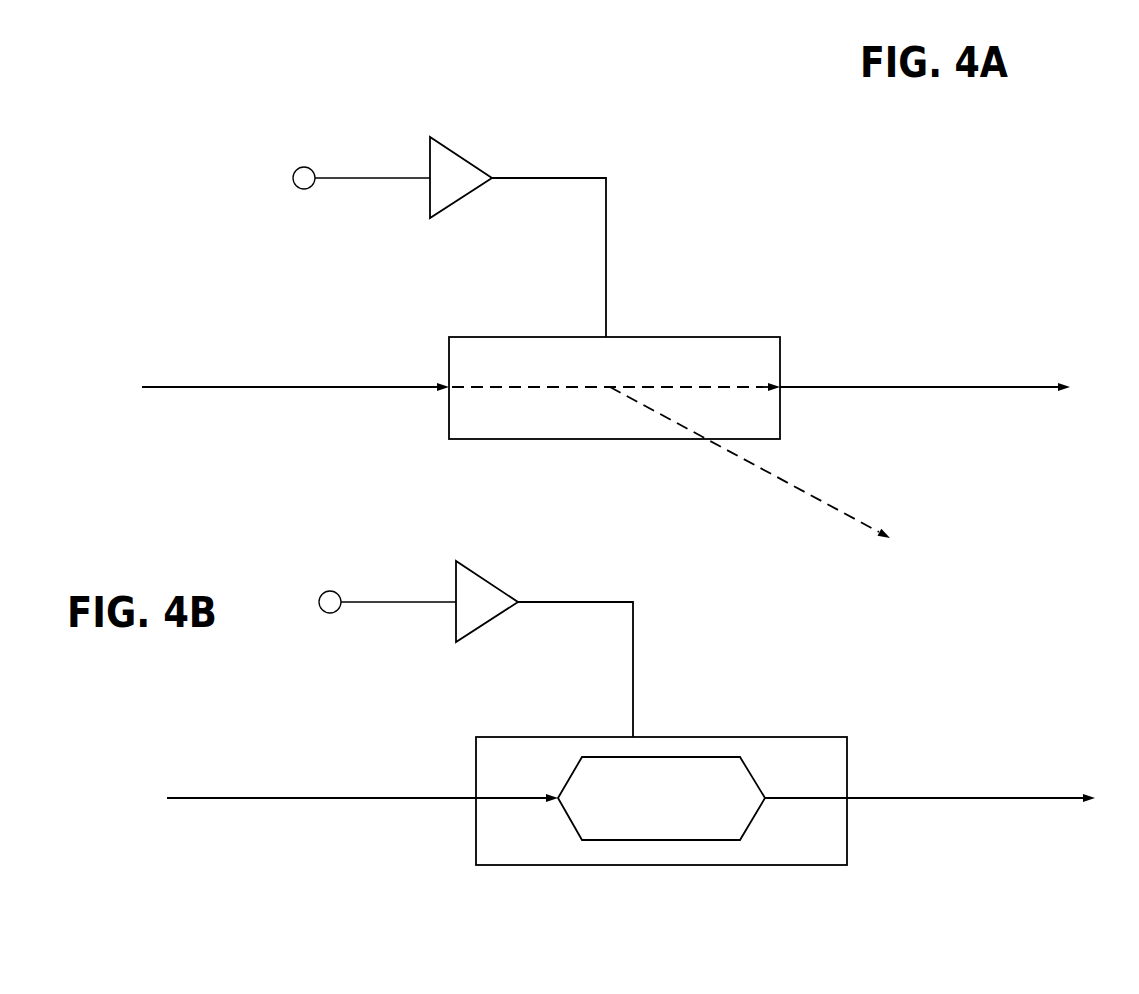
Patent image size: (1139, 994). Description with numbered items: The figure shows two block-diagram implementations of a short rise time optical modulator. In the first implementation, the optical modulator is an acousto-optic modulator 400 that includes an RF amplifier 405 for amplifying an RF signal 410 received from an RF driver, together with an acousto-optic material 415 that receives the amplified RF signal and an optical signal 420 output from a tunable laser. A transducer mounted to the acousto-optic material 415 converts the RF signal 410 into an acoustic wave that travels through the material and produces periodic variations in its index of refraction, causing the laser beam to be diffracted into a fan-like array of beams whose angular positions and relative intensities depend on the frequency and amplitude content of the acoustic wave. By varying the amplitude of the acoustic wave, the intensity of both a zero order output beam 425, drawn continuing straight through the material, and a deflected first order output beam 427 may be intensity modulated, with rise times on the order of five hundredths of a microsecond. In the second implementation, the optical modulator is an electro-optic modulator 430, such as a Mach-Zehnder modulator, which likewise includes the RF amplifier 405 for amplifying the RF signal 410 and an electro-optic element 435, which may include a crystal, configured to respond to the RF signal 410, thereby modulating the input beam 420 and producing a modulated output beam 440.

In FIG. 4A, the acousto-optic modulator 400 is at (800, 258).
In FIG. 4A, the RF amplifier 405 is at (460, 168).
In FIG. 4B, the RF amplifier 405 is at (480, 596).
In FIG. 4A, the RF signal 410 is at (607, 221).
In FIG. 4B, the RF signal 410 is at (633, 652).
In FIG. 4A, the acousto-optic material 415 is at (531, 432).
In FIG. 4A, the optical signal 420 is at (283, 390).
In FIG. 4B, the optical signal 420 is at (287, 800).
In FIG. 4A, the zero order output beam 425 is at (848, 388).
In FIG. 4A, the first order output beam 427 is at (780, 478).
In FIG. 4B, the electro-optic modulator 430 is at (840, 680).
In FIG. 4B, the electro-optic element 435 is at (505, 844).
In FIG. 4B, the modulated output beam 440 is at (1005, 800).